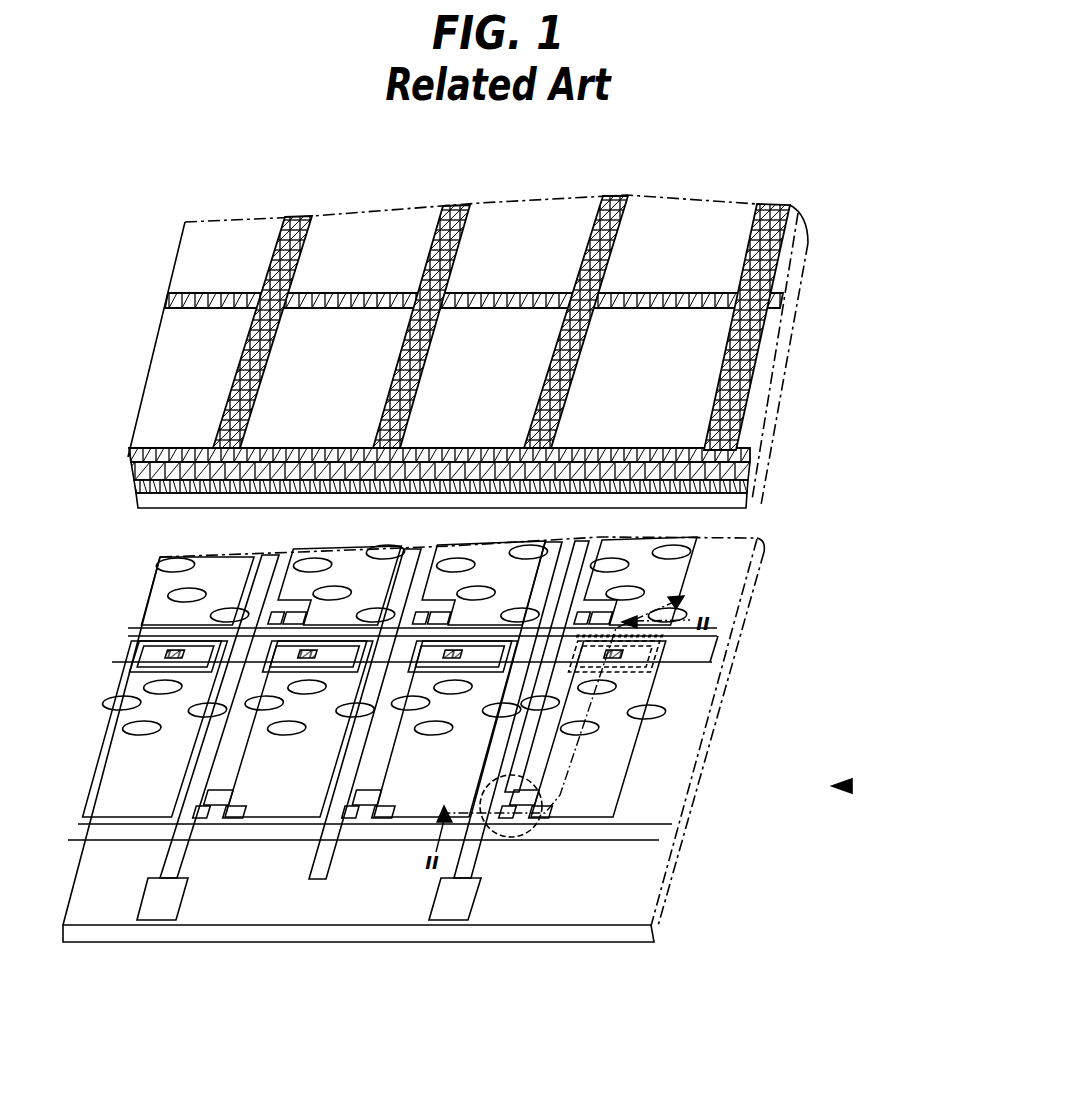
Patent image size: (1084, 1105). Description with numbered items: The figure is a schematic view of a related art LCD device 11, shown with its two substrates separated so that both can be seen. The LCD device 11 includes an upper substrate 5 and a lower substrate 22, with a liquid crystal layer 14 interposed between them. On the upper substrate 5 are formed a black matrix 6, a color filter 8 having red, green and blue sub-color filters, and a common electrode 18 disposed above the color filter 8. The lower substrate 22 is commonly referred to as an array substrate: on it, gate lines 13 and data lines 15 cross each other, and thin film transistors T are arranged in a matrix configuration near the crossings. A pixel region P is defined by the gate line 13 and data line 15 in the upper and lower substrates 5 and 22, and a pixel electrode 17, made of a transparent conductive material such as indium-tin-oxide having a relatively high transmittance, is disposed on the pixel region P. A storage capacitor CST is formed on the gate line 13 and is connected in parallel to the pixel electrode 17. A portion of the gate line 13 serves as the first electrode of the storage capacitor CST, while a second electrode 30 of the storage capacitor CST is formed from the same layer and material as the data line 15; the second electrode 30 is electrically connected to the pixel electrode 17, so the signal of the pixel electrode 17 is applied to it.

The upper substrate 5 is at (130, 465).
The black matrix 6 is at (783, 307).
The color filter 8 is at (720, 258).
The common electrode 18 is at (732, 498).
The LCD device 11 is at (850, 790).
The gate line 13 is at (625, 833).
The liquid crystal layer 14 is at (680, 598).
The data line 15 is at (445, 866).
The pixel electrode 17 is at (618, 793).
The lower substrate 22 is at (612, 932).
The second electrode 30 is at (650, 648).
The pixel region P is at (667, 747).
The thin film transistor T is at (533, 828).
The storage capacitor CST is at (650, 667).